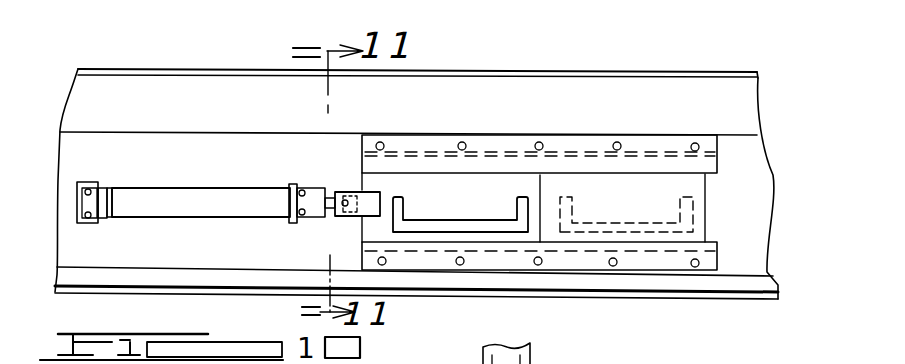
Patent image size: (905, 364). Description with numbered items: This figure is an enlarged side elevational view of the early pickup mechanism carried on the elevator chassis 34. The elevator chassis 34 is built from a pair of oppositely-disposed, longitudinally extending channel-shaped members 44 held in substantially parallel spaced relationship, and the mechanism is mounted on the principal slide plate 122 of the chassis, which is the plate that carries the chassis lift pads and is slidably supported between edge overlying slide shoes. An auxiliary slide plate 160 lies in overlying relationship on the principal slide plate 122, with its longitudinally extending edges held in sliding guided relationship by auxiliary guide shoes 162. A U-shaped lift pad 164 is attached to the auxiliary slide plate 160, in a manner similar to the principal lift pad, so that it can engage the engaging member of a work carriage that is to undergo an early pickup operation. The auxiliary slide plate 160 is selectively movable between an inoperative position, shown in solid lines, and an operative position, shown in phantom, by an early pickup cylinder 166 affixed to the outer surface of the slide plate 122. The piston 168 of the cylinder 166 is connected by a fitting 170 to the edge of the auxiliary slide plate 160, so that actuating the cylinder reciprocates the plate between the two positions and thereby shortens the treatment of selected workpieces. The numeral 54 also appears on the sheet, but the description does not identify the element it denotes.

The elevator chassis 34 is at (516, 66).
The channel-shaped member 44 is at (660, 88).
The slide plate 122 is at (180, 137).
The auxiliary slide plate 160 is at (540, 192).
The auxiliary guide shoe 162 is at (498, 140).
The U-shaped lift pad 164 is at (395, 225).
The early pickup cylinder 166 is at (197, 197).
The piston 168 is at (338, 160).
The fitting 170 is at (380, 198).
The support bracket 54 is at (530, 360).